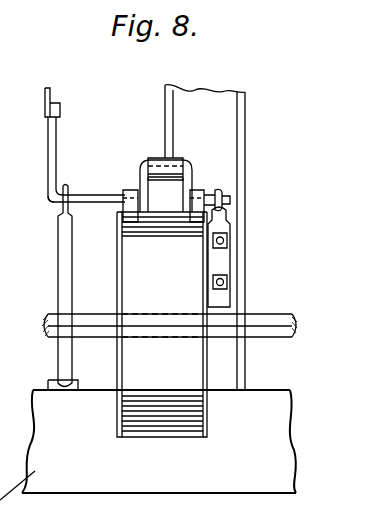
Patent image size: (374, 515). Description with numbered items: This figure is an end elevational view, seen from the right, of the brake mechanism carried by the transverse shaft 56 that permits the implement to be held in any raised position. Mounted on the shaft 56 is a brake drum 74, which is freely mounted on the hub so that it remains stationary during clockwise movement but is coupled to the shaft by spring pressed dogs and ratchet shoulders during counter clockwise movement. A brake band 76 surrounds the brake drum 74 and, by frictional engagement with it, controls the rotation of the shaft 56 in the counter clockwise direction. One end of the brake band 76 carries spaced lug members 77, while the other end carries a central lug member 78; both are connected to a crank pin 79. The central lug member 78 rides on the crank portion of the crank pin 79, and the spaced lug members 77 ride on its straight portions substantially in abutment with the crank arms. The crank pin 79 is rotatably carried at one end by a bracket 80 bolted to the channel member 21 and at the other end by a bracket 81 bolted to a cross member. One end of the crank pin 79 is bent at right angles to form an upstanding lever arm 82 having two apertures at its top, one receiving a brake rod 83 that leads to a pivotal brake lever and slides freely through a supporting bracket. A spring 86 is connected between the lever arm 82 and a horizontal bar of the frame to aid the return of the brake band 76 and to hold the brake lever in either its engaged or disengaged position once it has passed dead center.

The channel member 21 is at (246, 100).
The transverse shaft 56 is at (272, 319).
The brake drum 74 is at (115, 435).
The brake band 76 is at (163, 437).
The spaced lug members 77 is at (193, 192).
The central lug member 78 is at (184, 159).
The crank pin 79 is at (187, 165).
The bracket 80 is at (230, 256).
The bracket 81 is at (58, 248).
The lever arm 82 is at (48, 128).
The brake rod 83 is at (46, 88).
The spring 86 is at (28, 185).